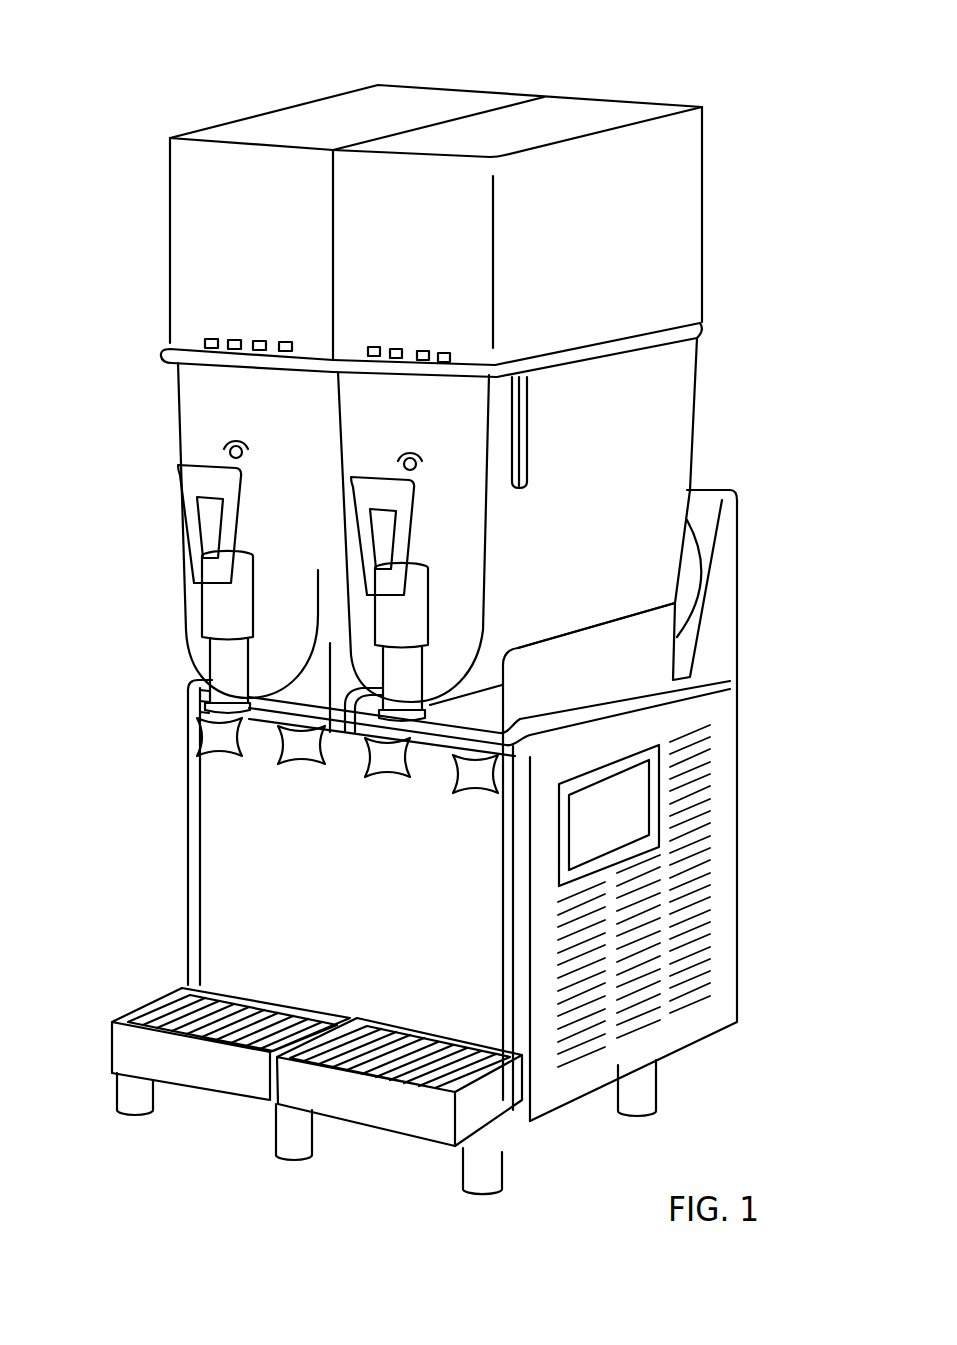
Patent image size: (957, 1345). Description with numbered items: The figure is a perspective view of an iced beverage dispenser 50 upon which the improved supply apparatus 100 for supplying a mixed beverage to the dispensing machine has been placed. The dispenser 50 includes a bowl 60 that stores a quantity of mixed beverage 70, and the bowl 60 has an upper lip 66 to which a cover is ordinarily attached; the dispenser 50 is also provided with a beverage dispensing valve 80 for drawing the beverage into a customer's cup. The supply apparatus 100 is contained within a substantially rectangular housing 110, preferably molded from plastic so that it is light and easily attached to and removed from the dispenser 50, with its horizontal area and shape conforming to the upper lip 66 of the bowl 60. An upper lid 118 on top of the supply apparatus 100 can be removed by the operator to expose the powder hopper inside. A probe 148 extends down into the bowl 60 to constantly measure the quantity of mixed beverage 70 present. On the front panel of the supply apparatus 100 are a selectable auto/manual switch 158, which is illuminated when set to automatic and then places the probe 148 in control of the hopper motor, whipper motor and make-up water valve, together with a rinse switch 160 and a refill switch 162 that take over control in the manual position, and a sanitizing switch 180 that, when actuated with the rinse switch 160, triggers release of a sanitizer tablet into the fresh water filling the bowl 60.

The iced beverage dispenser 50 is at (797, 761).
The bowl 60 is at (443, 493).
The upper lip 66 is at (178, 408).
The mixed beverage 70 is at (650, 468).
The beverage dispensing valve 80 is at (400, 623).
The supply apparatus 100 is at (439, 201).
The housing 110 is at (458, 99).
The upper lid 118 is at (555, 120).
The probe 148 is at (525, 408).
The auto/manual switch 158 is at (531, 332).
The rinse switch 160 is at (427, 342).
The refill switch 162 is at (397, 342).
The sanitizing switch 180 is at (373, 340).